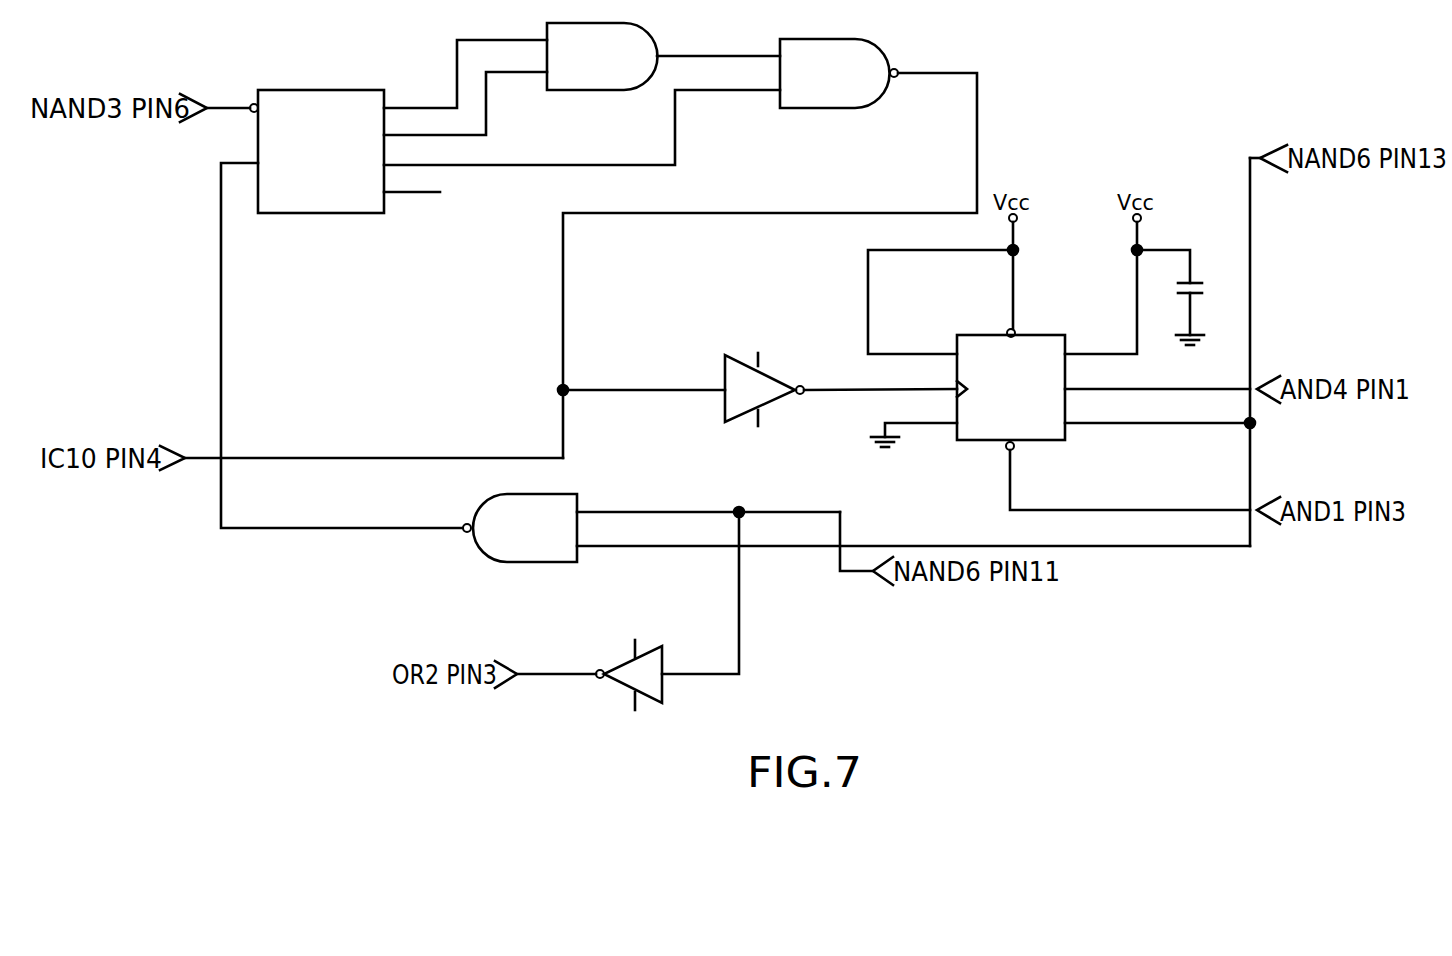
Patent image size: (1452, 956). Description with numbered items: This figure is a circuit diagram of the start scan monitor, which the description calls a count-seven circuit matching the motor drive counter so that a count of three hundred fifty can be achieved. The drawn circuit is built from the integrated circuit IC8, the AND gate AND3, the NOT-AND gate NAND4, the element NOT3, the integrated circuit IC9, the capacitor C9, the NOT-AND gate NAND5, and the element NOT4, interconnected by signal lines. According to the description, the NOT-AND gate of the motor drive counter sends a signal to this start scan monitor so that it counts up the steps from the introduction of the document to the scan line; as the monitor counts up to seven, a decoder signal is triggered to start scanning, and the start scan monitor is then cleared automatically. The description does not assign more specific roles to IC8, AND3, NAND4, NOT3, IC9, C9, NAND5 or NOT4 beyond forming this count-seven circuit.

The element IC8 is at (339, 137).
The AND gate AND3 is at (593, 53).
The NOT-AND gate NAND4 is at (828, 70).
The element NOT3 is at (766, 392).
The element IC9 is at (1023, 376).
The capacitor C9 is at (1184, 297).
The NOT-AND gate NAND5 is at (529, 524).
The element NOT4 is at (658, 689).